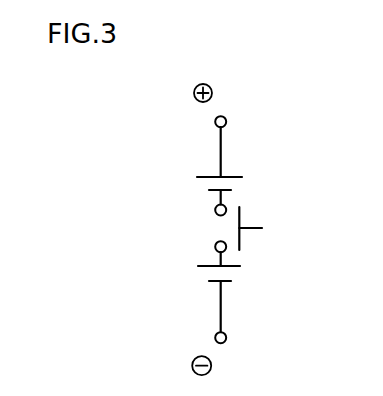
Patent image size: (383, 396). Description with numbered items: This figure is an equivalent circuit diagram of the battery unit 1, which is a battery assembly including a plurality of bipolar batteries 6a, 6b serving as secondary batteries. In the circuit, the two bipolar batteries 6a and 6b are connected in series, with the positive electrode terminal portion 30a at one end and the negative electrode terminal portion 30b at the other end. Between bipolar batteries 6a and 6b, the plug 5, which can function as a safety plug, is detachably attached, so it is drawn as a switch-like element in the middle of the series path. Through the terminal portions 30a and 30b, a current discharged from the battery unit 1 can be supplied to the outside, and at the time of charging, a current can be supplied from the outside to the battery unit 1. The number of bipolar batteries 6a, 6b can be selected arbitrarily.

The battery unit 1 is at (274, 101).
The terminal portion 30a is at (215, 122).
The terminal portion 30b is at (215, 338).
The bipolar battery 6a is at (232, 176).
The bipolar battery 6b is at (232, 264).
The plug 5 is at (262, 228).